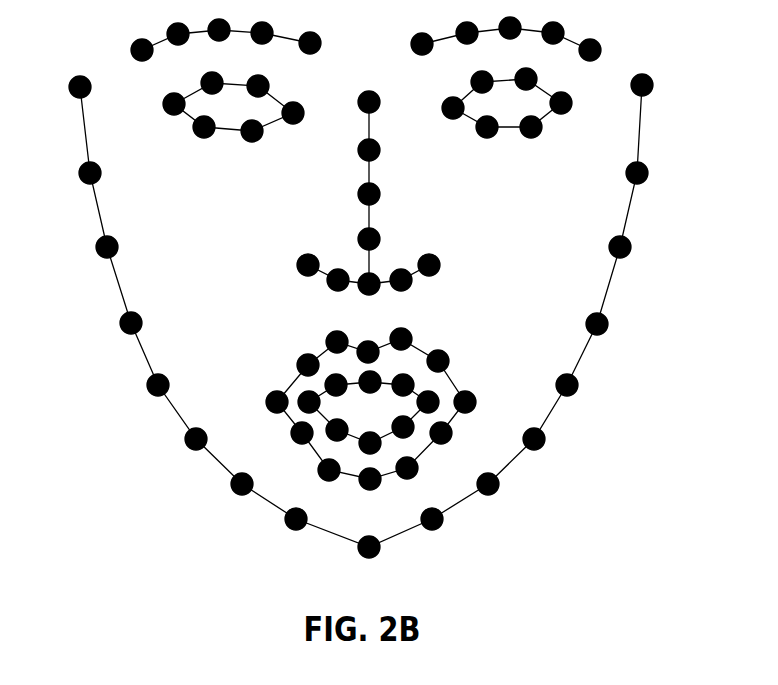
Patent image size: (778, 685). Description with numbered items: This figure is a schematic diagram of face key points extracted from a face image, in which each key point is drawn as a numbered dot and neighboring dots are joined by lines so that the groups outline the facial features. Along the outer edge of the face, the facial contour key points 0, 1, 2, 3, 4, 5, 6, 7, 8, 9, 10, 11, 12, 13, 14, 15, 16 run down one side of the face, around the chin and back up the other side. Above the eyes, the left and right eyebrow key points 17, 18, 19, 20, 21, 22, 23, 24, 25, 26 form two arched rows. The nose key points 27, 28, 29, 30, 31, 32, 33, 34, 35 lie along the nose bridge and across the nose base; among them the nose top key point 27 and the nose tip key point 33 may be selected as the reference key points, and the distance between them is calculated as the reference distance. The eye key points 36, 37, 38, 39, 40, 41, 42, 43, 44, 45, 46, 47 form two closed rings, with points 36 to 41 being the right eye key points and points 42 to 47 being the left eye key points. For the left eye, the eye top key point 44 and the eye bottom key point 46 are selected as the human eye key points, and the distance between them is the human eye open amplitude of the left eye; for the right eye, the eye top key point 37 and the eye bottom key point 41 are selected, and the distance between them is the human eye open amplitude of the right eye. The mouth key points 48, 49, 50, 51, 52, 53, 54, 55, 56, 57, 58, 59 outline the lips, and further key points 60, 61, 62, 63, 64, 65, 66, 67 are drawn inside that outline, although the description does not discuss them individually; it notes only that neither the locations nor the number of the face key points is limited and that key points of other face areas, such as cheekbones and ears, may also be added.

The facial contour key point 0 is at (80, 87).
The facial contour key point 1 is at (90, 173).
The facial contour key point 2 is at (107, 247).
The facial contour key point 3 is at (131, 323).
The facial contour key point 4 is at (158, 385).
The facial contour key point 5 is at (196, 439).
The facial contour key point 6 is at (242, 484).
The facial contour key point 7 is at (296, 519).
The facial contour key point 8 is at (369, 547).
The facial contour key point 9 is at (432, 519).
The facial contour key point 10 is at (488, 484).
The facial contour key point 11 is at (534, 439).
The facial contour key point 12 is at (567, 385).
The facial contour key point 13 is at (597, 324).
The facial contour key point 14 is at (620, 247).
The facial contour key point 15 is at (637, 173).
The facial contour key point 16 is at (642, 85).
The eyebrow key point 17 is at (142, 50).
The eyebrow key point 18 is at (178, 34).
The eyebrow key point 19 is at (219, 30).
The eyebrow key point 20 is at (262, 33).
The eyebrow key point 21 is at (310, 43).
The eyebrow key point 22 is at (422, 44).
The eyebrow key point 23 is at (467, 33).
The eyebrow key point 24 is at (510, 28).
The eyebrow key point 25 is at (553, 33).
The eyebrow key point 26 is at (590, 50).
The nose top key point 27 is at (369, 102).
The nose key point 28 is at (369, 150).
The nose key point 29 is at (369, 194).
The nose key point 30 is at (369, 239).
The nose key point 31 is at (308, 265).
The nose key point 32 is at (338, 280).
The nose tip key point 33 is at (369, 284).
The nose key point 34 is at (401, 280).
The nose key point 35 is at (429, 265).
The right eye key point 36 is at (174, 104).
The eye top key point 37 is at (212, 83).
The right eye key point 38 is at (258, 86).
The right eye key point 39 is at (293, 113).
The right eye key point 40 is at (252, 131).
The eye bottom key point 41 is at (204, 127).
The left eye key point 42 is at (453, 108).
The left eye key point 43 is at (482, 82).
The eye top key point 44 is at (526, 79).
The left eye key point 45 is at (561, 103).
The eye bottom key point 46 is at (531, 127).
The left eye key point 47 is at (487, 127).
The mouth key point 48 is at (277, 402).
The mouth key point 49 is at (308, 365).
The mouth key point 50 is at (337, 342).
The mouth key point 51 is at (368, 352).
The mouth key point 52 is at (401, 339).
The mouth key point 53 is at (438, 361).
The mouth key point 54 is at (465, 402).
The mouth key point 55 is at (441, 433).
The mouth key point 56 is at (407, 468).
The mouth key point 57 is at (370, 479).
The mouth key point 58 is at (329, 470).
The mouth key point 59 is at (302, 433).
The inner lip landmark 60 is at (309, 402).
The inner lip landmark 61 is at (336, 385).
The inner lip landmark 62 is at (370, 382).
The inner lip landmark 63 is at (403, 385).
The inner lip landmark 64 is at (428, 402).
The inner lip landmark 65 is at (403, 427).
The inner lip landmark 66 is at (370, 443).
The inner lip landmark 67 is at (337, 430).